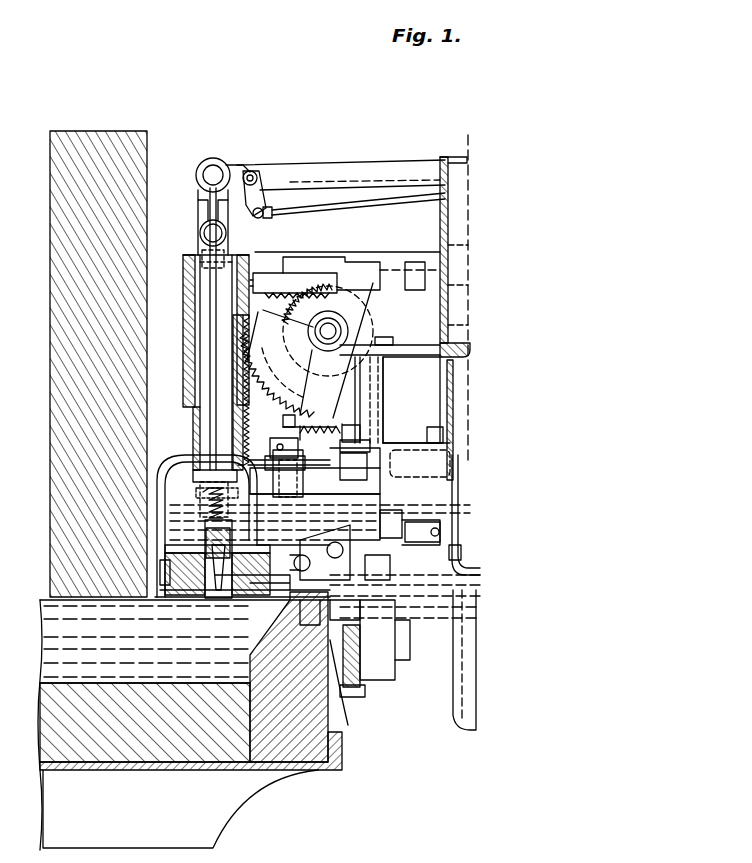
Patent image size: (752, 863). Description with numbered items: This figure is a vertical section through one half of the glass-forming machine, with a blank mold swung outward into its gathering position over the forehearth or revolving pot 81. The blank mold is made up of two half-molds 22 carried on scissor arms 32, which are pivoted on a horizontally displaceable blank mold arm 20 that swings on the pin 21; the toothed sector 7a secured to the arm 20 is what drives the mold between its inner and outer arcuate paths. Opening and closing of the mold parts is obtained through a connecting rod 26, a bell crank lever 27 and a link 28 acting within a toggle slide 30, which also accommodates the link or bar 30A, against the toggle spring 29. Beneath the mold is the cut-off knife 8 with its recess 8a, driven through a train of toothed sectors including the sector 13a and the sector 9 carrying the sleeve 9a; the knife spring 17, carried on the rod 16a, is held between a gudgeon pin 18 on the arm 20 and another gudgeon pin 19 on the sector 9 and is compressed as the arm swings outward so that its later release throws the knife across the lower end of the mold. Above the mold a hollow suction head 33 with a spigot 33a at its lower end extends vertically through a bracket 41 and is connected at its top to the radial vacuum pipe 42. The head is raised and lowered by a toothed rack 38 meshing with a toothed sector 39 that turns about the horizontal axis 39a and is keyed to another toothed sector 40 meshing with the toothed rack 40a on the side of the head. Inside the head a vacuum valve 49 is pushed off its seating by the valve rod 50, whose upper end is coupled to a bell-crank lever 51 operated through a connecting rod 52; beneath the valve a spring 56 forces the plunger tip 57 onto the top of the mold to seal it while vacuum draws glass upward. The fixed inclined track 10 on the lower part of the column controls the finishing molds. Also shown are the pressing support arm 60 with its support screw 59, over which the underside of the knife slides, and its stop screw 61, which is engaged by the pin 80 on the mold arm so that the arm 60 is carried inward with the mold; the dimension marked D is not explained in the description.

The toothed sector 7a is at (452, 635).
The cut-off knife 8 is at (262, 603).
The recess 8a is at (276, 615).
The toothed sector 9 is at (340, 450).
The sleeve 9a is at (382, 388).
The fixed inclined track 10 is at (410, 355).
The toothed sector 13a is at (297, 452).
The rod 16a is at (292, 413).
The spring 17 is at (320, 425).
The gudgeon pin 18 is at (288, 443).
The gudgeon pin 19 is at (336, 432).
The blank mold arm 20 is at (388, 492).
The pin 21 is at (416, 460).
The half-mold 22 is at (208, 603).
The connecting rod 26 is at (464, 515).
The bell crank lever 27 is at (342, 542).
The link 28 is at (370, 520).
The toggle spring 29 is at (303, 508).
The toggle slide 30 is at (320, 516).
The link or bar 30A is at (304, 617).
The scissor arms 32 is at (177, 601).
The suction head 33 is at (200, 443).
The spigot 33a is at (180, 553).
The toothed rack 38 is at (267, 272).
The toothed sector 39 is at (305, 290).
The axis 39a is at (340, 328).
The toothed sector 40 is at (243, 347).
The toothed rack 40a is at (246, 355).
The bracket 41 is at (184, 290).
The vacuum pipe 42 is at (352, 165).
The vacuum valve 49 is at (180, 468).
The valve rod 50 is at (217, 417).
The bell-crank lever 51 is at (258, 195).
The connecting rod 52 is at (402, 193).
The spring 56 is at (195, 507).
The plunger tip 57 is at (215, 530).
The support screw 59 is at (355, 692).
The pressing support arm 60 is at (380, 690).
The stop screw 61 is at (387, 640).
The pin 80 is at (347, 695).
The forehearth or revolving pot 81 is at (288, 730).
The distance D is at (107, 529).